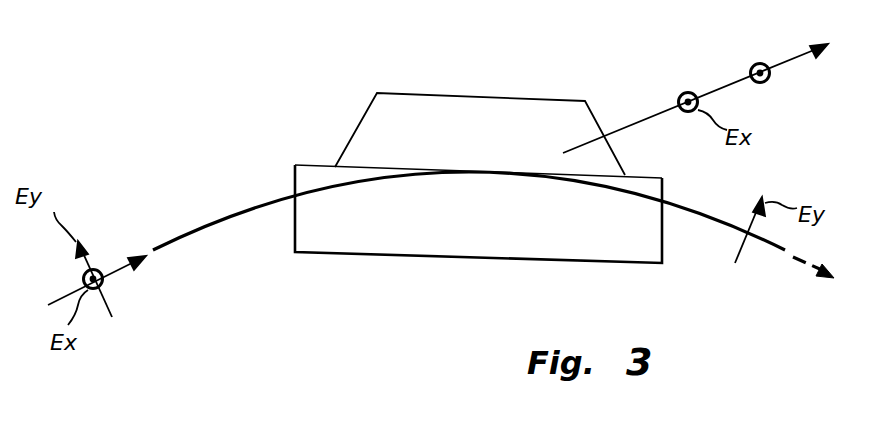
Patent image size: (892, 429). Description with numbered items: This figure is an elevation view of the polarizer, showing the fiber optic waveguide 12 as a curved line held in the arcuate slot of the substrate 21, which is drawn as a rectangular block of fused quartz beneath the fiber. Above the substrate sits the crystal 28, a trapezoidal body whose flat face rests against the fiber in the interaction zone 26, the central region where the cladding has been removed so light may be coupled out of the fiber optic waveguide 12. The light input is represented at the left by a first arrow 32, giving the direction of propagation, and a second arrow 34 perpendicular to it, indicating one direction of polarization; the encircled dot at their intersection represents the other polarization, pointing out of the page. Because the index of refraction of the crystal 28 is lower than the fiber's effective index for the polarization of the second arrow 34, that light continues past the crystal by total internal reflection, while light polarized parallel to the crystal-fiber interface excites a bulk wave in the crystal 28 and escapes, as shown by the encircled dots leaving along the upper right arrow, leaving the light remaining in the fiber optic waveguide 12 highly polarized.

The fiber optic waveguide 12 is at (233, 218).
The substrate 21 is at (460, 247).
The interaction zone 26 is at (488, 165).
The crystal 28 is at (360, 118).
The first arrow 32 is at (120, 268).
The second arrow 34 is at (88, 268).